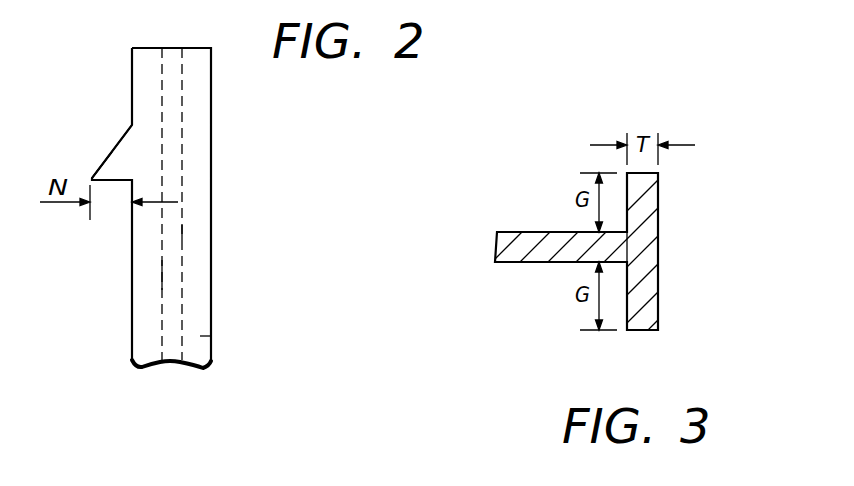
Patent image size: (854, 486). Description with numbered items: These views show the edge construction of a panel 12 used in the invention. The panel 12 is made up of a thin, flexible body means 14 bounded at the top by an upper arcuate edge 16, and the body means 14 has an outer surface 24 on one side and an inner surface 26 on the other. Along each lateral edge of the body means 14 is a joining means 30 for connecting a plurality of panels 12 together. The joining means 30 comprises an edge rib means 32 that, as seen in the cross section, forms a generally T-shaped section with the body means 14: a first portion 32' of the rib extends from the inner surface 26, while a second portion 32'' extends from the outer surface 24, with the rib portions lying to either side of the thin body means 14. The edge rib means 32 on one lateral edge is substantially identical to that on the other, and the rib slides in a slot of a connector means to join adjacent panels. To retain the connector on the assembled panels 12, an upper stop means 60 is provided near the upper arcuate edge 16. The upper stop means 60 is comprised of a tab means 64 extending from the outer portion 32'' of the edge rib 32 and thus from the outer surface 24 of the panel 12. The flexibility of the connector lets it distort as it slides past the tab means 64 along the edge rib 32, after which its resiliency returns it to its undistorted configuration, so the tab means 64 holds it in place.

In FIG. 3, the panel 12 is at (494, 261).
In FIG. 2, the body means 14 is at (162, 46).
In FIG. 3, the body means 14 is at (498, 231).
In FIG. 2, the upper arcuate edge 16 is at (182, 46).
In FIG. 2, the outer surface 24 is at (165, 275).
In FIG. 3, the outer surface 24 is at (540, 262).
In FIG. 2, the inner surface 26 is at (182, 233).
In FIG. 3, the inner surface 26 is at (537, 232).
In FIG. 3, the joining means 30 is at (659, 298).
In FIG. 2, the edge rib means 32 is at (245, 325).
In FIG. 3, the edge rib means 32 is at (710, 172).
In FIG. 2, the first portion of edge rib means 32' is at (250, 275).
In FIG. 3, the first portion of edge rib means 32' is at (705, 205).
In FIG. 2, the second portion of edge rib means 32'' is at (79, 325).
In FIG. 3, the second portion of edge rib means 32'' is at (705, 253).
In FIG. 2, the upper stop means 60 is at (120, 137).
In FIG. 2, the tab means 64 is at (100, 167).